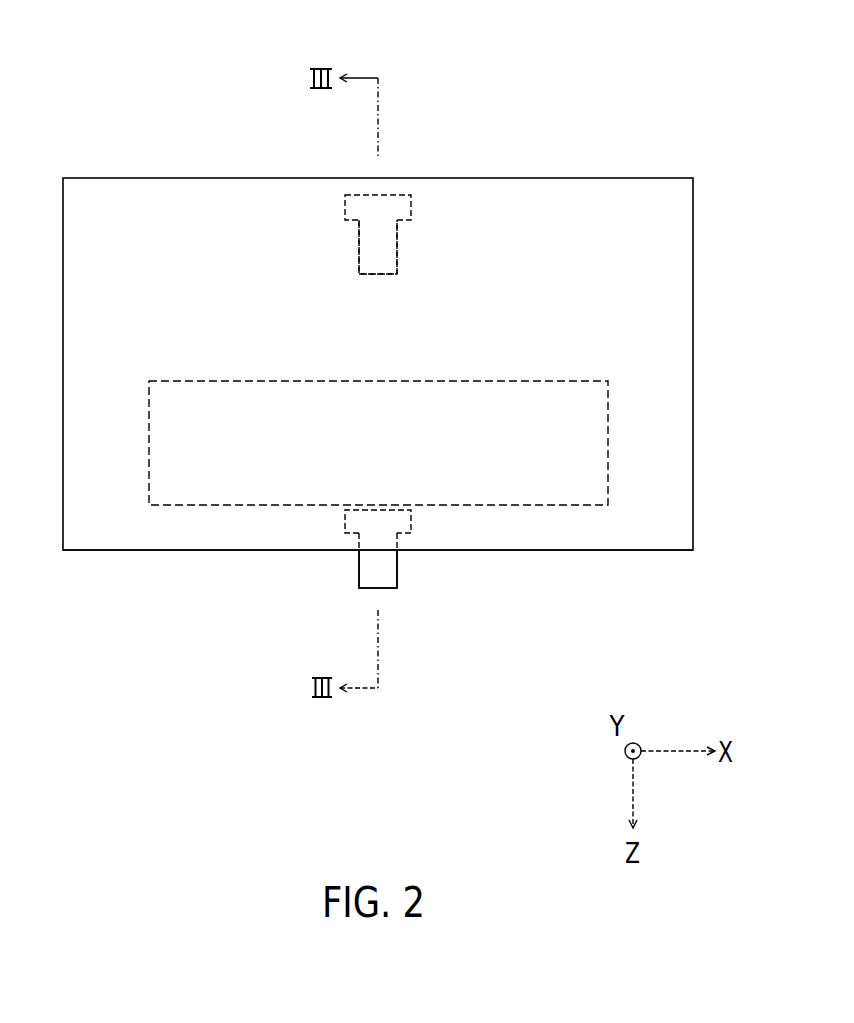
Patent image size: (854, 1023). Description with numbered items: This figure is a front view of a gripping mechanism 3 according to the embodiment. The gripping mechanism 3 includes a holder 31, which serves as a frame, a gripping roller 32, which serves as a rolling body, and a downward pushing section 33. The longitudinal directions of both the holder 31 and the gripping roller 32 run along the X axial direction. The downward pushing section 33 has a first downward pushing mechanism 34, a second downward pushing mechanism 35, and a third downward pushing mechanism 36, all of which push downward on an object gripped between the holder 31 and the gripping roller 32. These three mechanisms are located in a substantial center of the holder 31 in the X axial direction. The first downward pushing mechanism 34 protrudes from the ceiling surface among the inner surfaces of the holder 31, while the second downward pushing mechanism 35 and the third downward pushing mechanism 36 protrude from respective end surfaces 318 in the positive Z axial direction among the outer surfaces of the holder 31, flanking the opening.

The gripping mechanism 3 is at (618, 108).
The holder 31 is at (183, 178).
The end surface 318 is at (145, 551).
The gripping roller 32 is at (490, 380).
The downward pushing section 33 is at (423, 210).
The first downward pushing mechanism 34 is at (360, 257).
The second downward pushing mechanism 35 is at (358, 570).
The third downward pushing mechanism 36 is at (378, 569).